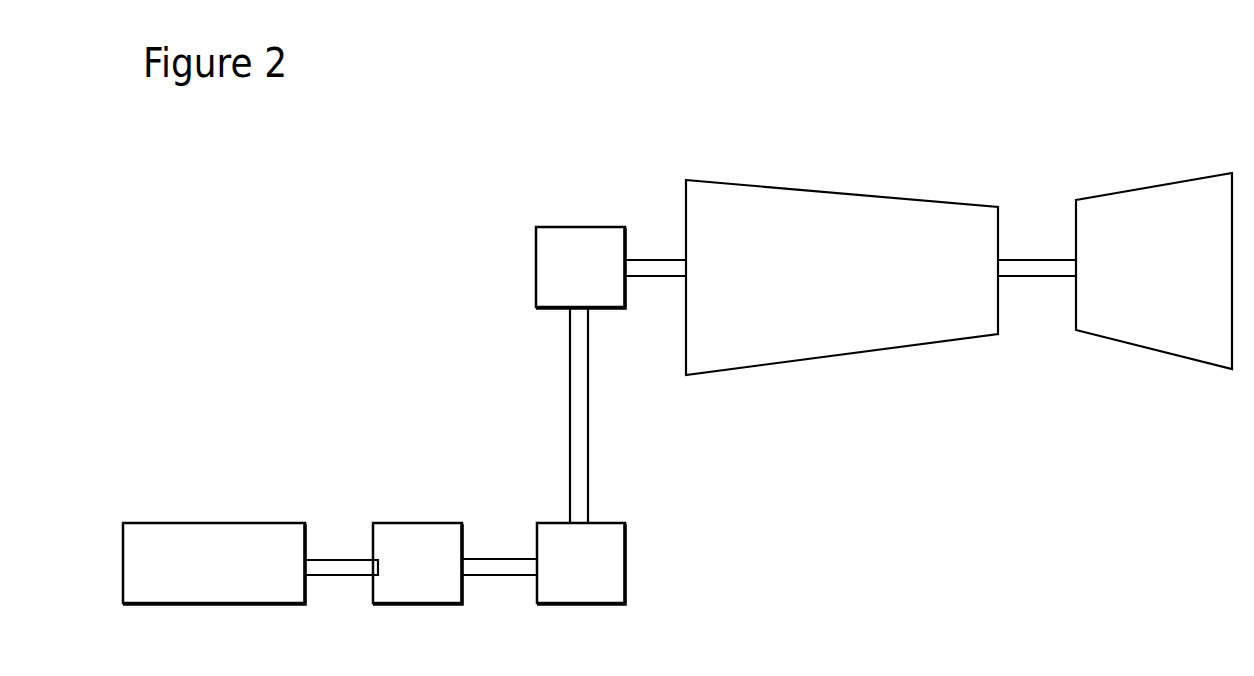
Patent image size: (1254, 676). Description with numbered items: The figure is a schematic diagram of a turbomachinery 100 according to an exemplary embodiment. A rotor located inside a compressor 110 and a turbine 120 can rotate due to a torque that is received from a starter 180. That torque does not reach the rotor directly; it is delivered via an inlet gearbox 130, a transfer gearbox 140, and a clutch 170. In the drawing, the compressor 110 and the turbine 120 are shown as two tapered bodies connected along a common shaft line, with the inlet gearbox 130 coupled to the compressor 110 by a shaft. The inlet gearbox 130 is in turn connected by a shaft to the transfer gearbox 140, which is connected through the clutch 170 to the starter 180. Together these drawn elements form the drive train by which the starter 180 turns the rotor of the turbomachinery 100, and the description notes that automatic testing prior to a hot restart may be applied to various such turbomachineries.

The turbomachinery 100 is at (593, 92).
The compressor 110 is at (823, 192).
The turbine 120 is at (1165, 183).
The inlet gearbox 130 is at (553, 308).
The transfer gearbox 140 is at (617, 523).
The clutch 170 is at (460, 523).
The starter 180 is at (210, 523).